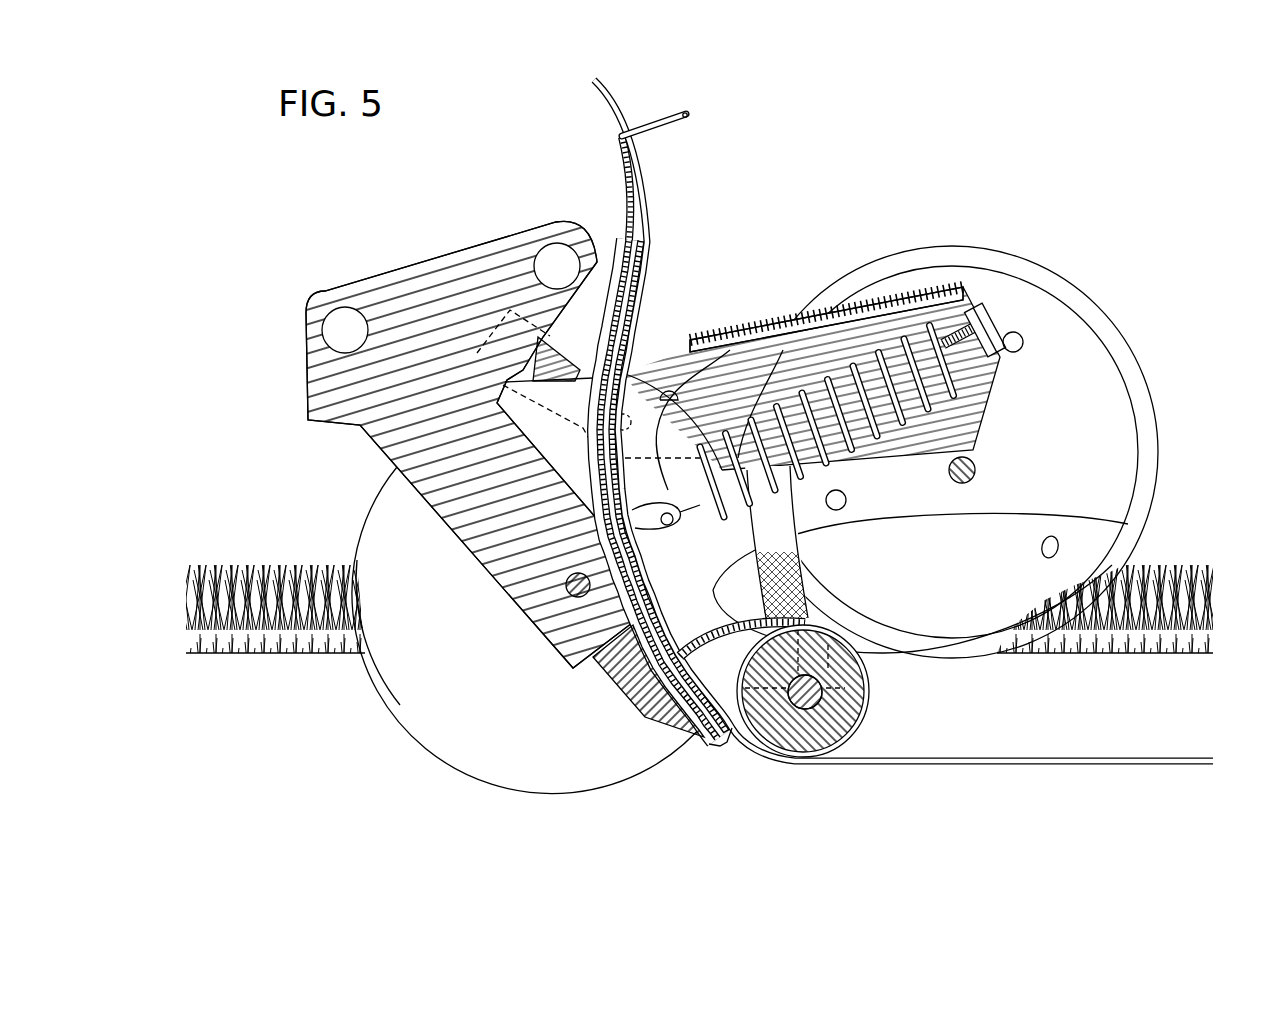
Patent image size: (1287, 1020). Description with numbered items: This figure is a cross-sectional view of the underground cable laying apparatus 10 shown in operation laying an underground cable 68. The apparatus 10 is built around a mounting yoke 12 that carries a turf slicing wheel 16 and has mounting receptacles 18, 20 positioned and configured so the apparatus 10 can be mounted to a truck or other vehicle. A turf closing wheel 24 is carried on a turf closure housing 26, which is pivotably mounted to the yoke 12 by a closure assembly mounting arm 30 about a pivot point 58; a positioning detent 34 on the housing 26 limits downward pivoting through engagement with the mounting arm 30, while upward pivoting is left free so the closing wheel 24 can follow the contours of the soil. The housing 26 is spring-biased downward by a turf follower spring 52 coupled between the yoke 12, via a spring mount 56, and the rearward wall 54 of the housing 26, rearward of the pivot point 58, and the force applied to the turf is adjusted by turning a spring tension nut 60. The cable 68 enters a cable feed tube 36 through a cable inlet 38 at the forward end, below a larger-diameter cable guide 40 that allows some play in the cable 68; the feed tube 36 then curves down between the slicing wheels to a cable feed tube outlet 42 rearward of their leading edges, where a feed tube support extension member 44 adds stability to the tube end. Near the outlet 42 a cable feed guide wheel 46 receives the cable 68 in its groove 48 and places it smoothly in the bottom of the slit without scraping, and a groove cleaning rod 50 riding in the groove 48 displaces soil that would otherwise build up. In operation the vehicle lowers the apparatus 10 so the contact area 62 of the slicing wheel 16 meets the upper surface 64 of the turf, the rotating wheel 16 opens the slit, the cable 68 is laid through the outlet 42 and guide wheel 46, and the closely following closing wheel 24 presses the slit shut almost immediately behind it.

The underground cable laying apparatus 10 is at (1130, 110).
The mounting yoke 12 is at (400, 277).
The turf slicing wheel 16 is at (480, 770).
The mounting receptacle 18 is at (550, 257).
The mounting receptacle 20 is at (333, 323).
The turf closing wheel 24 is at (1120, 410).
The turf closure housing 26 is at (792, 307).
The closure assembly mounting arm 30 is at (592, 420).
The positioning detent 34 is at (724, 350).
The cable feed tube 36 is at (643, 300).
The cable inlet 38 is at (647, 235).
The cable guide 40 is at (660, 122).
The cable feed tube outlet 42 is at (740, 737).
The feed tube support extension member 44 is at (650, 717).
The cable feed guide wheel 46 is at (870, 688).
The groove 48 is at (868, 742).
The groove cleaning rod 50 is at (1112, 521).
The turf follower spring 52 is at (870, 340).
The rearward wall 54 is at (980, 310).
The spring mount 56 is at (783, 350).
The pivot point 58 is at (624, 425).
The spring tension nut 60 is at (950, 333).
The contact area 62 is at (383, 693).
The upper surface of the turf 64 is at (317, 640).
The cable 68 is at (605, 103).